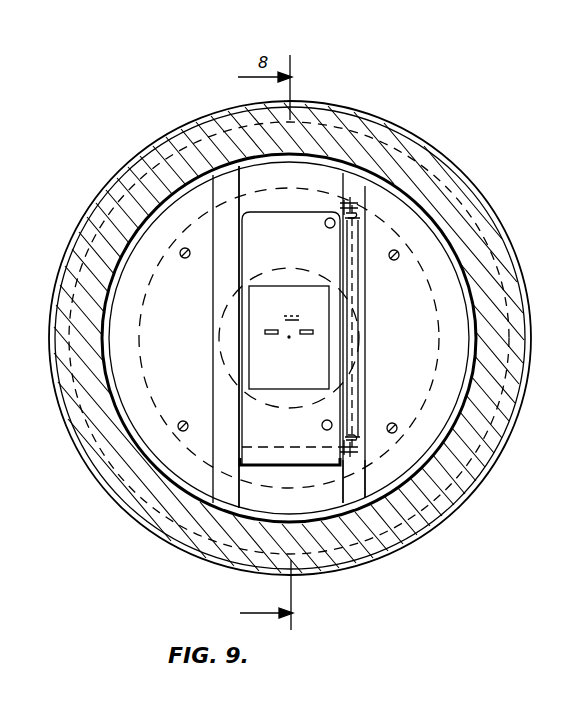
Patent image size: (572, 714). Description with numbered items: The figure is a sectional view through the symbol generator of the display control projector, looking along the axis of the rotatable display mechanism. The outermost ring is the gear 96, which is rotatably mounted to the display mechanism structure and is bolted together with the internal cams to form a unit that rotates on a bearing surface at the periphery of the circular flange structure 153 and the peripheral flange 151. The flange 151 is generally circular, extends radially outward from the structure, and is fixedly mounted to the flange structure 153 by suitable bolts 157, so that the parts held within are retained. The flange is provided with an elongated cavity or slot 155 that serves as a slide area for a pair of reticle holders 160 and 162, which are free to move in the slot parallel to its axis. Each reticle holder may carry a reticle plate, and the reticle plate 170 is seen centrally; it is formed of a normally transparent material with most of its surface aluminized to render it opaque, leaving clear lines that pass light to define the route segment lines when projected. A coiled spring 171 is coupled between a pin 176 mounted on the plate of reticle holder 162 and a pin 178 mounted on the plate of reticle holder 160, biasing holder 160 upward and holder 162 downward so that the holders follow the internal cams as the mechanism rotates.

The gear 96 is at (465, 175).
The circular flange structure 153 is at (165, 218).
The peripheral flange 151 is at (258, 495).
The bolts 157 is at (182, 259).
The reticle holder 162 is at (313, 197).
The reticle holder 160 is at (293, 455).
The reticle plate 170 is at (335, 287).
The coiled spring 171 is at (350, 373).
The pin 176 is at (355, 200).
The pin 178 is at (352, 450).
The elongated cavity or slot 155 is at (323, 475).